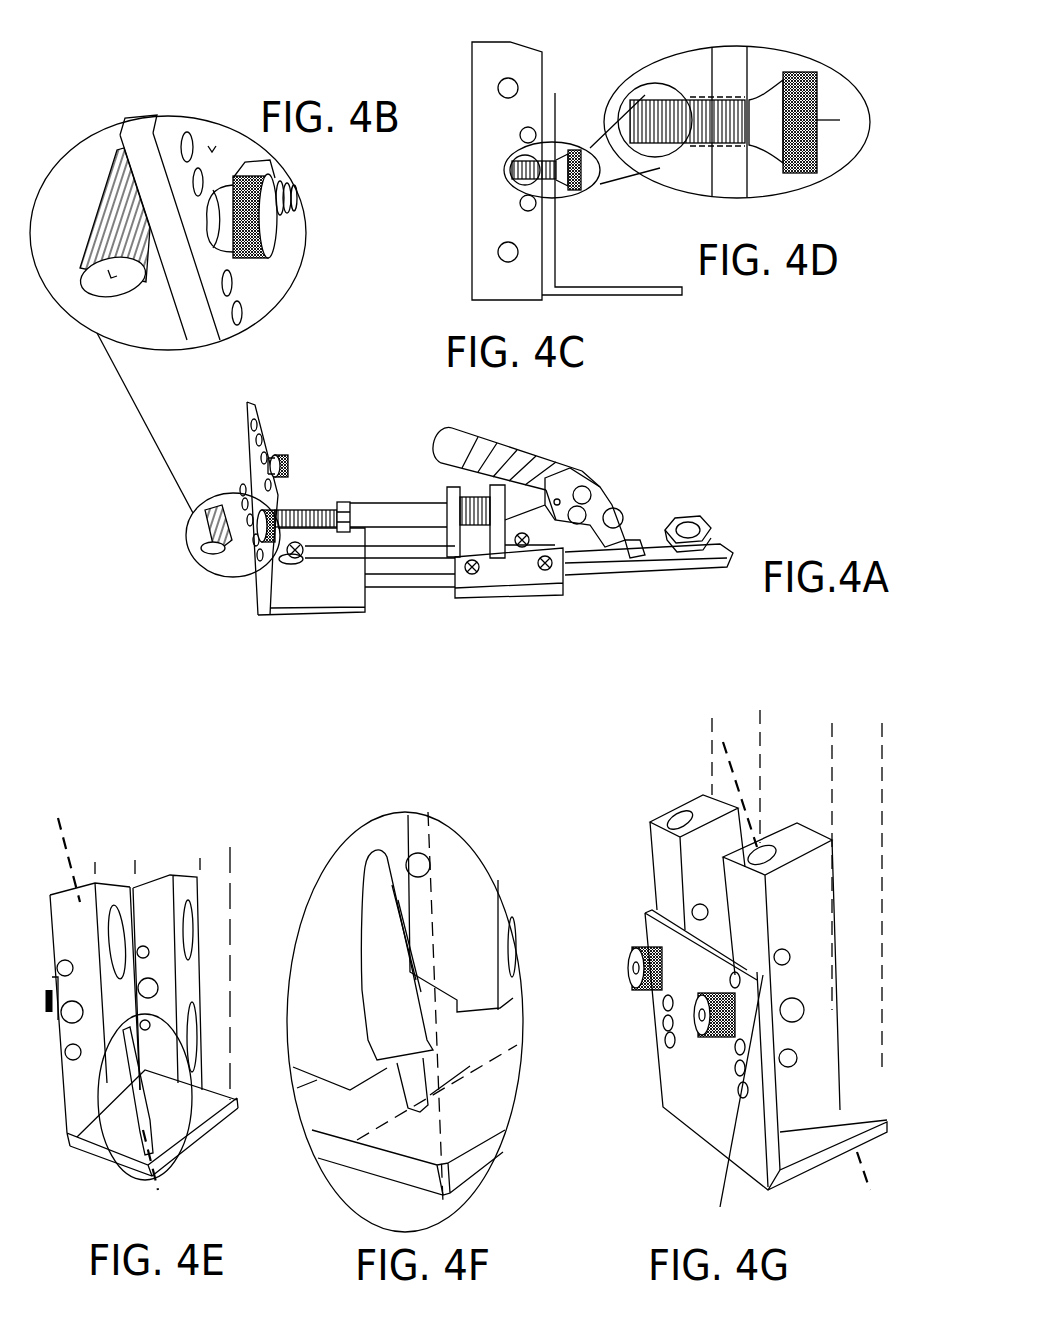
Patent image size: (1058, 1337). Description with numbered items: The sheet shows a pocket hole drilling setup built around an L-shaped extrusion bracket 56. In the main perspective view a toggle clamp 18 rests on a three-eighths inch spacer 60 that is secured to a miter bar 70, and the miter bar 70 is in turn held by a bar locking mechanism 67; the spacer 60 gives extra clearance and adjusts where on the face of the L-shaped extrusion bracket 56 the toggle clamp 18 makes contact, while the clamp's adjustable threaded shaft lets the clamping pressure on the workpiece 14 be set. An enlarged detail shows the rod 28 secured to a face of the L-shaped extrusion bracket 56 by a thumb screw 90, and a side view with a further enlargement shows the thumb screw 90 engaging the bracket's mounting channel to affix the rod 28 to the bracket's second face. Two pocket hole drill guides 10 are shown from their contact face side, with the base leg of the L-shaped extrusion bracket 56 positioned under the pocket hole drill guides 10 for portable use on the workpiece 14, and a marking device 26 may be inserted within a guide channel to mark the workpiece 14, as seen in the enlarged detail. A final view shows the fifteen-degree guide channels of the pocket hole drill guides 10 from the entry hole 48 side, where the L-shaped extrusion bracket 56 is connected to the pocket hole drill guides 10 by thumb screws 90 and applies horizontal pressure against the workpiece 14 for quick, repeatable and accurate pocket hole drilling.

In FIG. 4E, the pocket hole drill guide 10 is at (85, 868).
In FIG. 4F, the pocket hole drill guide 10 is at (343, 880).
In FIG. 4G, the pocket hole drill guide 10 is at (675, 873).
In FIG. 4E, the workpiece 14 is at (218, 833).
In FIG. 4G, the workpiece 14 is at (770, 738).
In FIG. 4A, the toggle clamp 18 is at (548, 460).
In FIG. 4F, the marking device 26 is at (390, 973).
In FIG. 4B, the rod 28 is at (80, 273).
In FIG. 4A, the rod 28 is at (208, 548).
In FIG. 4G, the entry hole 48 is at (675, 820).
In FIG. 4B, the L-shaped extrusion bracket 56 is at (190, 327).
In FIG. 4C, the L-shaped extrusion bracket 56 is at (555, 217).
In FIG. 4D, the L-shaped extrusion bracket 56 is at (717, 170).
In FIG. 4A, the L-shaped extrusion bracket 56 is at (322, 578).
In FIG. 4E, the L-shaped extrusion bracket 56 is at (93, 1148).
In FIG. 4F, the L-shaped extrusion bracket 56 is at (493, 1105).
In FIG. 4G, the L-shaped extrusion bracket 56 is at (830, 1167).
In FIG. 4A, the spacer 60 is at (527, 597).
In FIG. 4A, the bar locking mechanism 67 is at (690, 523).
In FIG. 4A, the miter bar 70 is at (655, 562).
In FIG. 4B, the thumb screw 90 is at (253, 257).
In FIG. 4D, the thumb screw 90 is at (807, 173).